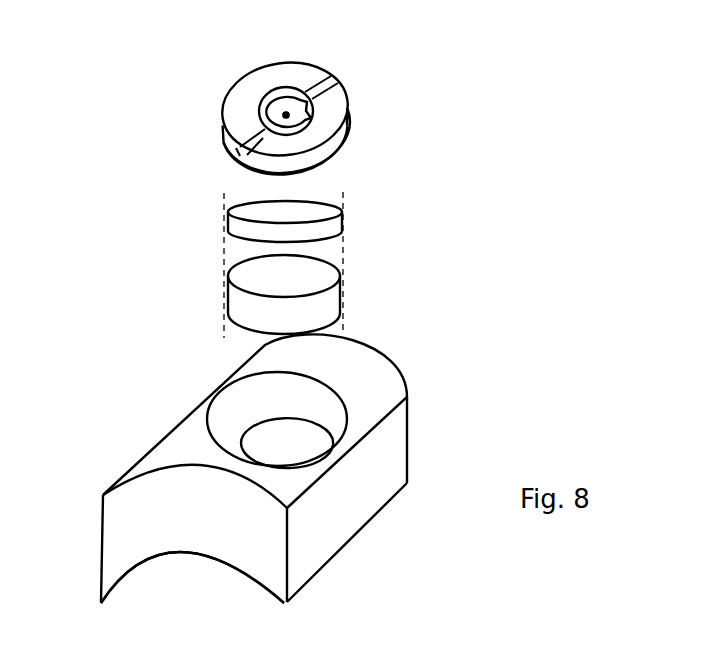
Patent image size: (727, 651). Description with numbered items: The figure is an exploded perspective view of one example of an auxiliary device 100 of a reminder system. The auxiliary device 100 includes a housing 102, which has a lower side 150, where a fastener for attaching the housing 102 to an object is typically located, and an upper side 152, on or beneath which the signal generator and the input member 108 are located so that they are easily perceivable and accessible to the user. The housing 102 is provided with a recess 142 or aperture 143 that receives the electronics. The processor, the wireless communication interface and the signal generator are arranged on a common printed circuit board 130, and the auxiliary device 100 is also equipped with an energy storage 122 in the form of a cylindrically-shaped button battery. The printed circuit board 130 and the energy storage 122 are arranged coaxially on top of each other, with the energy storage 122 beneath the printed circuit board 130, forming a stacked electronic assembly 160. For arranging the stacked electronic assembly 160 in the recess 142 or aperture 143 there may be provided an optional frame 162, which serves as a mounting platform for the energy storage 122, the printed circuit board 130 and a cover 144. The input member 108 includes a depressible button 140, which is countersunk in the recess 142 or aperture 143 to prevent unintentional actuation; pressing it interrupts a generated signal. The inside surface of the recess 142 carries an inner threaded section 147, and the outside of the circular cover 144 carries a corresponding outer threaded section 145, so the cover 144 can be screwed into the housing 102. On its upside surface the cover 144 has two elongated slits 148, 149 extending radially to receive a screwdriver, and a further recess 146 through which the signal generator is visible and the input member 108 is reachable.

The auxiliary device 100 is at (67, 191).
The housing 102 is at (157, 455).
The input member 108 is at (311, 119).
The energy storage 122 is at (238, 297).
The printed circuit board 130 is at (235, 225).
The button 140 is at (290, 94).
The recess 142 is at (335, 408).
The aperture 143 is at (309, 452).
The cover 144 is at (332, 118).
The threaded section 145 is at (230, 135).
The recess of the cover 146 is at (258, 89).
The threaded section 147 is at (225, 423).
The elongated slit 148 is at (307, 100).
The elongated slit 149 is at (245, 148).
The lower side 150 is at (185, 553).
The upper side 152 is at (395, 392).
The stacked electronic assembly 160 is at (371, 248).
The frame 162 is at (343, 236).